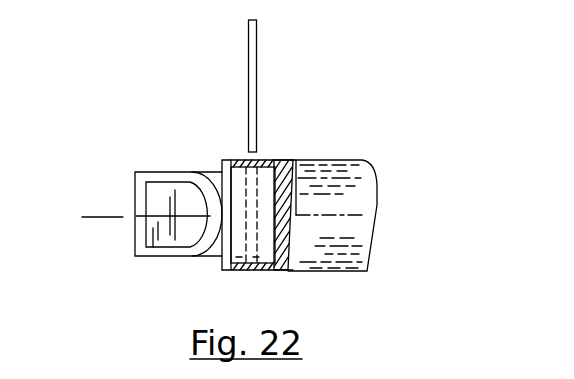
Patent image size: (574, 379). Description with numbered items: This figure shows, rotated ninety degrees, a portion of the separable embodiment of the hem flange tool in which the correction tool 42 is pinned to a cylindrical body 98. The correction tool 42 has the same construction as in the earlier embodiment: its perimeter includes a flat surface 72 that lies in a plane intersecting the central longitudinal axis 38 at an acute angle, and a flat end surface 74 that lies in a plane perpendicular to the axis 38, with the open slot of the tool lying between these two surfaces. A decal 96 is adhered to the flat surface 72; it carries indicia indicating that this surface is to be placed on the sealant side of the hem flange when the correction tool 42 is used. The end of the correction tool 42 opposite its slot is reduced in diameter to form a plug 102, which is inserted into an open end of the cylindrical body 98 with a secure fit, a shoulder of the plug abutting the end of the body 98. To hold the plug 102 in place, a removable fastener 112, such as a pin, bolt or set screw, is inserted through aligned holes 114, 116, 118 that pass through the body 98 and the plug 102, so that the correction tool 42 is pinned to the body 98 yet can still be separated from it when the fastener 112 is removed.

The central longitudinal axis 38 is at (385, 193).
The correction tool 42 is at (97, 202).
The flat surface 72 is at (188, 167).
The flat end surface 74 is at (134, 189).
The decal 96 is at (155, 230).
The cylindrical body 98 is at (365, 160).
The plug 102 is at (320, 162).
The removable fastener 112 is at (258, 68).
The hole 114 is at (260, 160).
The hole 116 is at (247, 227).
The hole 118 is at (252, 272).